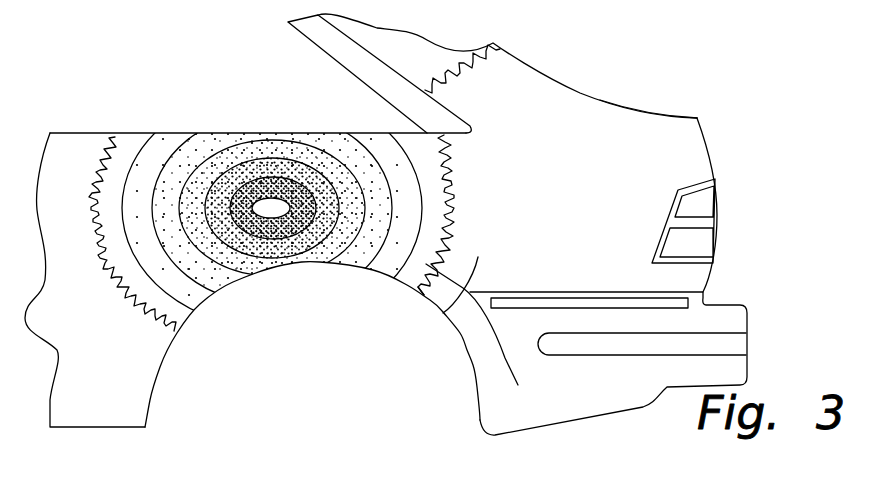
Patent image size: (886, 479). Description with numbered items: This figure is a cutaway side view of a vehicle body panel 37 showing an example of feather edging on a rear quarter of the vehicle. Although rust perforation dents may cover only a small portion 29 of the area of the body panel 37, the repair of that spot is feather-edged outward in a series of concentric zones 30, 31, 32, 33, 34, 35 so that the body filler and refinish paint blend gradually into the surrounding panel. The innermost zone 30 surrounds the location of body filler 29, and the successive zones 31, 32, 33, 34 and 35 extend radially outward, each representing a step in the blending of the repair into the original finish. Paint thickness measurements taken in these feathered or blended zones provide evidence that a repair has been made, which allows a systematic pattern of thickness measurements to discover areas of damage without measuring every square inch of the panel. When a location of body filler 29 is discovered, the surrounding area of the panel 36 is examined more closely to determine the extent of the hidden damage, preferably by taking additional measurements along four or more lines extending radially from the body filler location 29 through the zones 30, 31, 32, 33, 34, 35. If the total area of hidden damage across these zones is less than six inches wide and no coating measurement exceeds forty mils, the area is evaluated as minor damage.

The small portion 29 is at (270, 210).
The feather-edged repair zone 30 is at (245, 263).
The feather-edged repair zone 31 is at (270, 250).
The feather-edged repair zone 32 is at (310, 252).
The feather-edged repair zone 33 is at (353, 250).
The feather-edged repair zone 34 is at (380, 257).
The feather-edged repair zone 35 is at (413, 240).
The surrounding area of the panel 36 is at (443, 313).
The body panel 37 is at (622, 105).